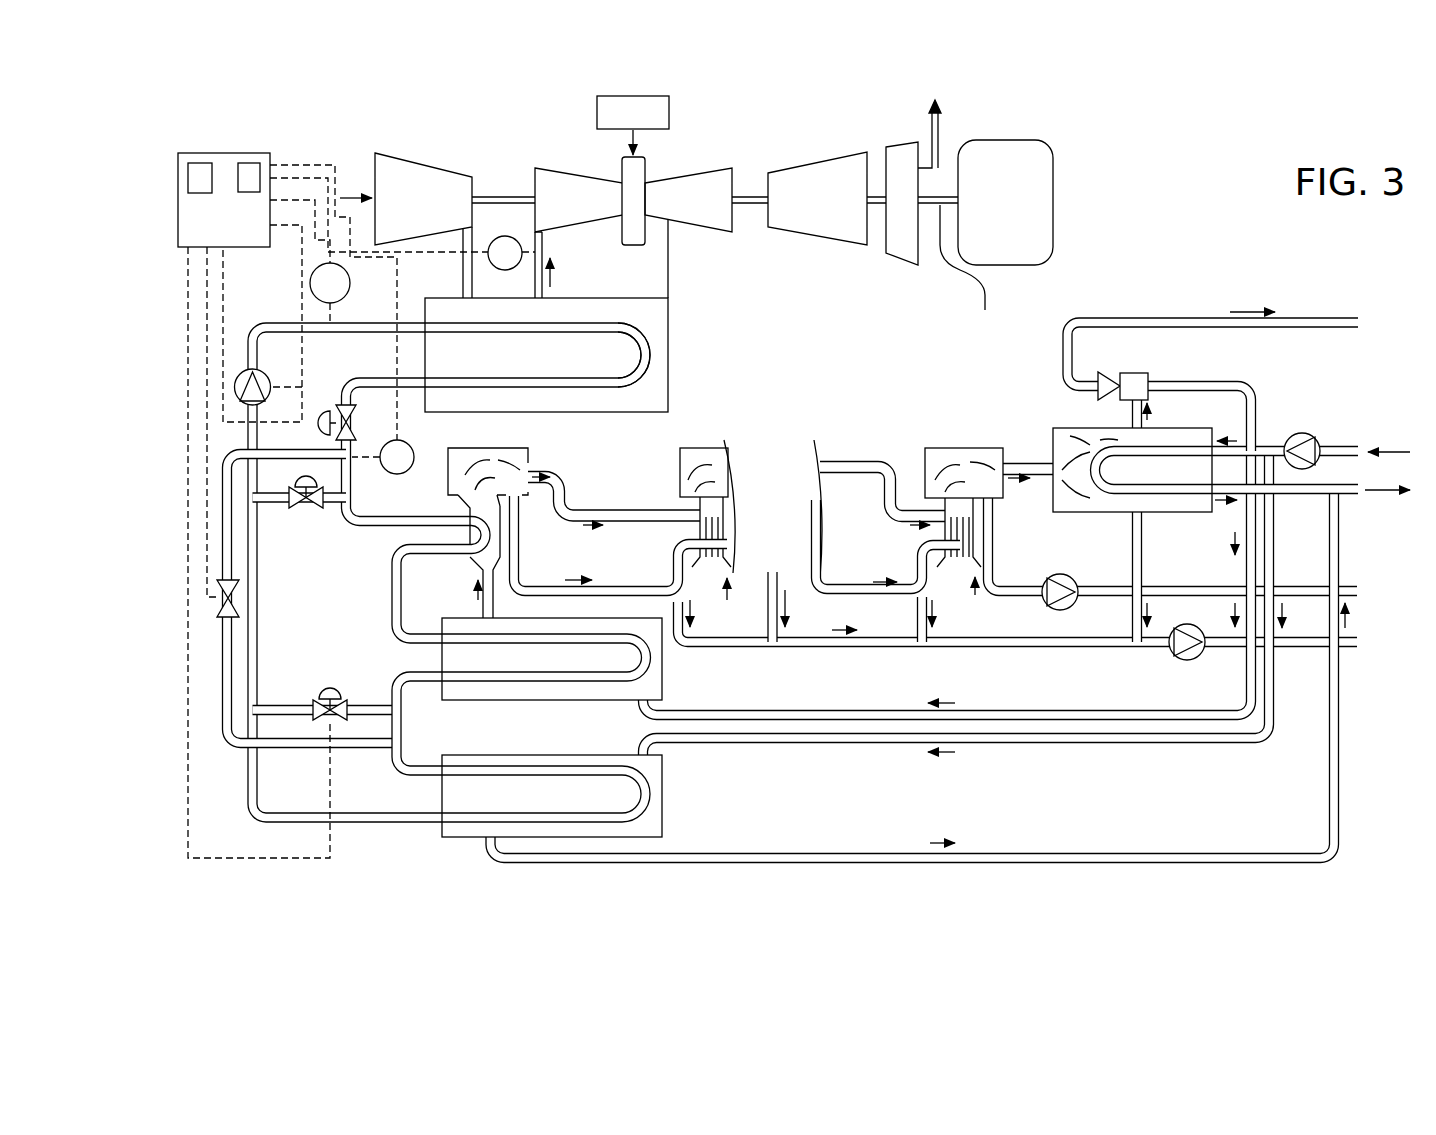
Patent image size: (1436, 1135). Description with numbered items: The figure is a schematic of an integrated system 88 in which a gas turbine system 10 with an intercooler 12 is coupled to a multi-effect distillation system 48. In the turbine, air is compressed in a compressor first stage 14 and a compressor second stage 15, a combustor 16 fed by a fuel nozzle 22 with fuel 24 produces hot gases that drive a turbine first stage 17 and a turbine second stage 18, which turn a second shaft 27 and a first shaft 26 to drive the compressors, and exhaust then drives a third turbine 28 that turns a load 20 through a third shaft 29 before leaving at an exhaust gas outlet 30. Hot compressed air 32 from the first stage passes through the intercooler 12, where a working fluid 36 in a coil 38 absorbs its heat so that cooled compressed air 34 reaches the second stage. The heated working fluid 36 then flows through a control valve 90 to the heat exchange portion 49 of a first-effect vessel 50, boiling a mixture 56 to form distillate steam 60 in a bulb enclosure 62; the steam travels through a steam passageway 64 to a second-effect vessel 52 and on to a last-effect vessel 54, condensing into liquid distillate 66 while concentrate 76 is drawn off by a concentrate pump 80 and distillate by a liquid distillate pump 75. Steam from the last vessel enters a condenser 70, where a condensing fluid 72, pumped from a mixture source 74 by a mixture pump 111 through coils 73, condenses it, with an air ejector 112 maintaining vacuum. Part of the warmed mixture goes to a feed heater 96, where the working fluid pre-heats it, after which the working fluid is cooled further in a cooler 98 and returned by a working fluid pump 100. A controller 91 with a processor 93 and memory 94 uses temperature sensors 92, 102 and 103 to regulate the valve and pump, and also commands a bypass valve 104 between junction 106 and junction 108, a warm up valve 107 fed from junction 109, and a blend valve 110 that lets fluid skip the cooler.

The gas turbine system 10 is at (1090, 156).
The intercooler 12 is at (670, 365).
The compressor first stage 14 is at (432, 152).
The compressor second stage 15 is at (552, 168).
The combustor 16 is at (633, 247).
The turbine first stage 17 is at (673, 225).
The turbine second stage 18 is at (818, 152).
The load 20 is at (1040, 140).
The fuel nozzle 22 is at (343, 193).
The fuel 24 is at (640, 132).
The first shaft 26 is at (505, 195).
The second shaft 27 is at (610, 157).
The third turbine 28 is at (900, 258).
The third shaft 29 is at (969, 269).
The exhaust gas outlet 30 is at (942, 142).
The compressed air 32 is at (463, 290).
The cooled compressed air 34 is at (553, 284).
The working fluid 36 is at (505, 316).
The coil 38 is at (665, 320).
The multi-effect distillation system 48 is at (1062, 305).
The heat exchange portion 49 is at (690, 513).
The first-effect vessel 50 is at (470, 452).
The second-effect vessel 52 is at (700, 447).
The last-effect vessel 54 is at (960, 447).
The mixture 56 is at (1398, 450).
The distillate steam 60 is at (535, 458).
The bulb enclosure 62 is at (456, 452).
The steam passageway 64 is at (538, 520).
The liquid distillate 66 is at (695, 625).
The condenser 70 is at (1090, 515).
The condensing fluid 72 is at (1230, 441).
The coils 73 is at (1135, 445).
The mixture source 74 is at (1372, 357).
The liquid distillate pump 75 is at (1233, 653).
The concentrate 76 is at (1118, 582).
The concentrate pump 80 is at (1068, 608).
The integrated system 88 is at (1233, 134).
The control valve 90 is at (350, 428).
The controller 91 is at (250, 152).
The temperature sensor 92 is at (412, 470).
The processor 93 is at (212, 178).
The memory 94 is at (252, 165).
The feed heater 96 is at (665, 662).
The cooler 98 is at (665, 790).
The working fluid pump 100 is at (240, 370).
The temperature sensor 102 is at (350, 288).
The temperature sensor 103 is at (518, 238).
The bypass valve 104 is at (220, 620).
The junction 106 is at (288, 484).
The warm up valve 107 is at (330, 518).
The junction 108 is at (340, 497).
The junction 109 is at (403, 767).
The blend valve 110 is at (340, 698).
The mixture pump 111 is at (1300, 433).
The air ejector 112 is at (1141, 368).